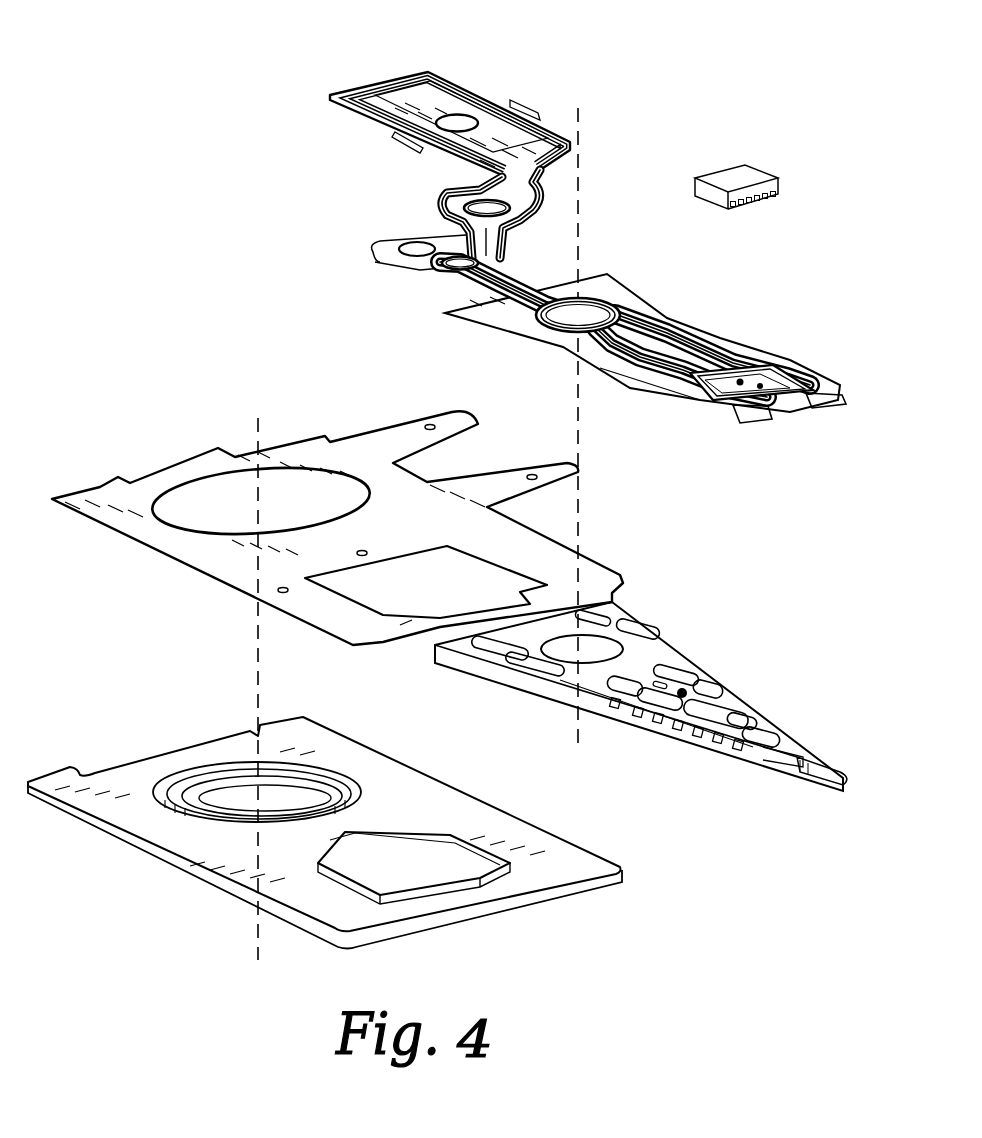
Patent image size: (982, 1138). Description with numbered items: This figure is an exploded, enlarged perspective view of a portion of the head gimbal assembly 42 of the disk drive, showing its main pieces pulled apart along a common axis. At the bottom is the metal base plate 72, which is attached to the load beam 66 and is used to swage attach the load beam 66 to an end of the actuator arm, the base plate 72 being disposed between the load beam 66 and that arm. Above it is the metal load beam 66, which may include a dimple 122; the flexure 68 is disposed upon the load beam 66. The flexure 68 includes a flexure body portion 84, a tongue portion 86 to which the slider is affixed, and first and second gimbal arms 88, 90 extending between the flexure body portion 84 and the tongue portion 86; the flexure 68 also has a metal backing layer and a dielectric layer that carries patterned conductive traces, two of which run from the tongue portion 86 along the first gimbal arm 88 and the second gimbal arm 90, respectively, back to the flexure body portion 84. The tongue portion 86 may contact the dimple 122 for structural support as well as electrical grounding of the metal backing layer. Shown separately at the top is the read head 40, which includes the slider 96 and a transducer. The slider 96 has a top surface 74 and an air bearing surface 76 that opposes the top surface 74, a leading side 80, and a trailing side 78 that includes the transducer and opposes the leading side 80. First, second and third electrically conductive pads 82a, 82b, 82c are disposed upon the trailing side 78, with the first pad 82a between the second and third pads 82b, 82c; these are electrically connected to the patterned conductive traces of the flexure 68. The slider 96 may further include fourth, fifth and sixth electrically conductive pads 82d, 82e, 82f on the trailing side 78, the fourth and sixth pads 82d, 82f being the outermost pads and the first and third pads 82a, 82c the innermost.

The head gimbal assembly 42 is at (460, 72).
The flexure body portion 84 is at (410, 85).
The flexure 68 is at (612, 300).
The first gimbal arm 88 is at (752, 358).
The tongue portion 86 is at (678, 400).
The second gimbal arm 90 is at (633, 372).
The leading side 80 is at (690, 173).
The air bearing surface 76 is at (727, 167).
The read head 40 is at (750, 173).
The slider 96 is at (766, 173).
The trailing side 78 is at (783, 184).
The top surface 74 is at (716, 208).
The first electrically conductive pad 82a is at (757, 199).
The second electrically conductive pad 82b is at (765, 197).
The third electrically conductive pad 82c is at (749, 201).
The fourth electrically conductive pad 82d is at (773, 194).
The fifth electrically conductive pad 82e is at (741, 203).
The sixth electrically conductive pad 82f is at (733, 205).
The load beam 66 is at (602, 578).
The dimple 122 is at (745, 717).
The metal base plate 72 is at (508, 823).